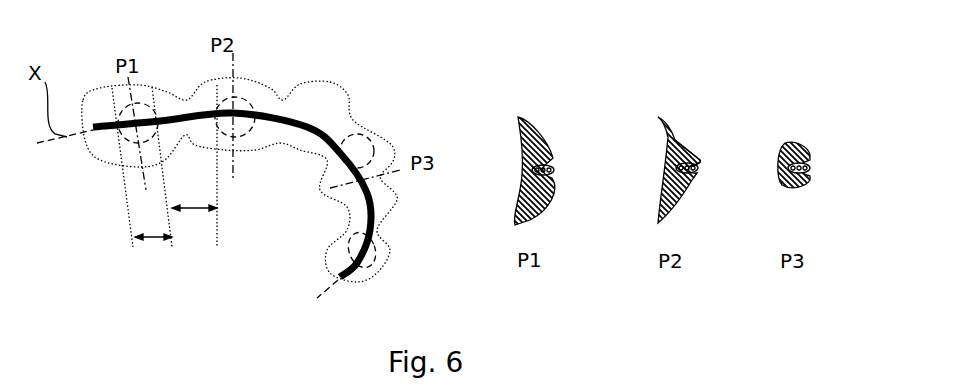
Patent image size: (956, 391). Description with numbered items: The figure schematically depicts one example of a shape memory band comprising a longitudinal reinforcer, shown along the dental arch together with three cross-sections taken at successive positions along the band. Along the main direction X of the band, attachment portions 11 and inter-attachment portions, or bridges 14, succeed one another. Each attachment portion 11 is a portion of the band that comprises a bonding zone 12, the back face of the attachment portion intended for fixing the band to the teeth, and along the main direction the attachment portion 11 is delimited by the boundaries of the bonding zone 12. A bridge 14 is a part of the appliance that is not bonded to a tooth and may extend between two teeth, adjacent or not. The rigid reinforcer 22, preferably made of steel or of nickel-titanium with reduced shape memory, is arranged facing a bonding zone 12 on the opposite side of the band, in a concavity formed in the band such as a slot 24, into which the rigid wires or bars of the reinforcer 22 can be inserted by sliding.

The attachment portion 11 is at (153, 254).
The bonding zone 12 is at (143, 103).
The bridge 14 is at (194, 225).
The reinforcer 22 is at (308, 124).
The slot 24 is at (672, 143).